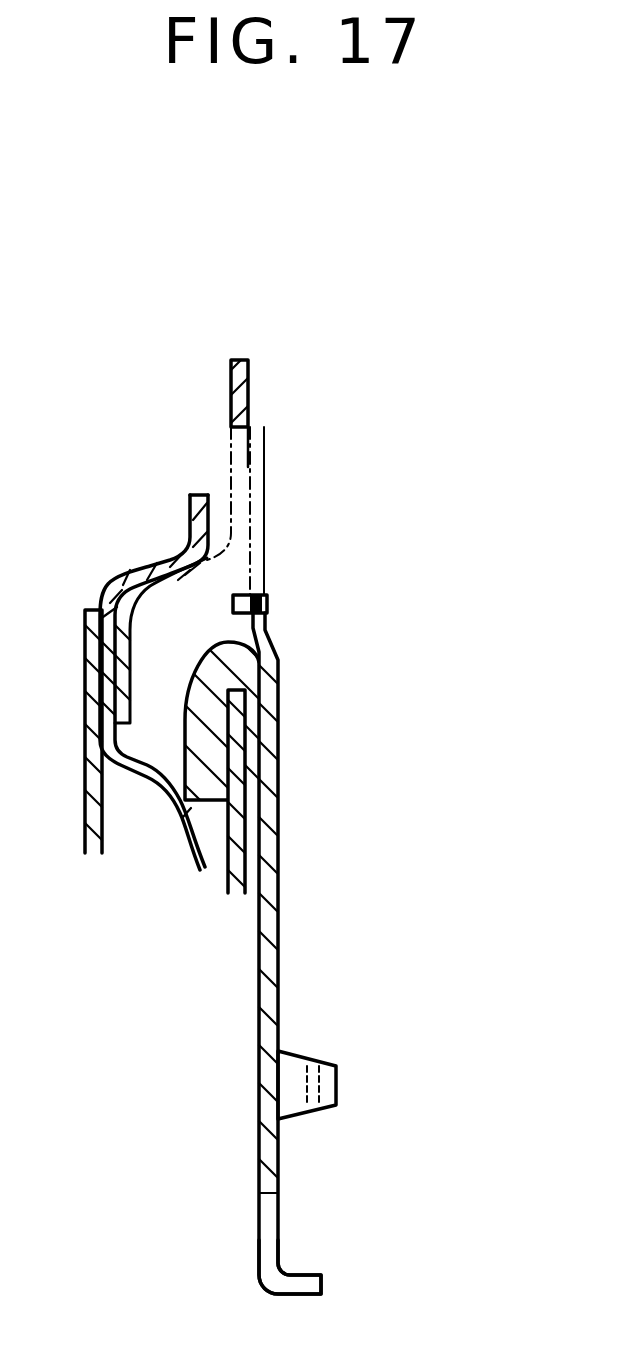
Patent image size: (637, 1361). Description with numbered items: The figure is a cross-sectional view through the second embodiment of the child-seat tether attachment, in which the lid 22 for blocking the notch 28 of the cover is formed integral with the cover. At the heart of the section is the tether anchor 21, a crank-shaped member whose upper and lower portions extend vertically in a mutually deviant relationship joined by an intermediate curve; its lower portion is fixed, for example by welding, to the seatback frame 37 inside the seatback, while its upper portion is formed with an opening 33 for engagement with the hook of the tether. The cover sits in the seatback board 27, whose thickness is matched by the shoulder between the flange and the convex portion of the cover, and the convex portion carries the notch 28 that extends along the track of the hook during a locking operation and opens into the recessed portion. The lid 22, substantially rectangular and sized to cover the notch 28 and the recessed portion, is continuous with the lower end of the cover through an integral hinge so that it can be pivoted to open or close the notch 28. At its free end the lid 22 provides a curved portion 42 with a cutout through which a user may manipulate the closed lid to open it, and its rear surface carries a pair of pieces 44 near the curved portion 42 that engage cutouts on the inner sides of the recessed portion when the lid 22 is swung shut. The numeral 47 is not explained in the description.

The tether anchor 21 is at (268, 367).
The lid 22 is at (312, 946).
The seatback board 27 is at (253, 810).
The notch 28 is at (264, 575).
The opening 33 is at (240, 467).
The seatback frame 37 is at (180, 848).
The curved portion 42 is at (279, 1256).
The pieces 44 is at (338, 1101).
The projection 47 is at (270, 625).